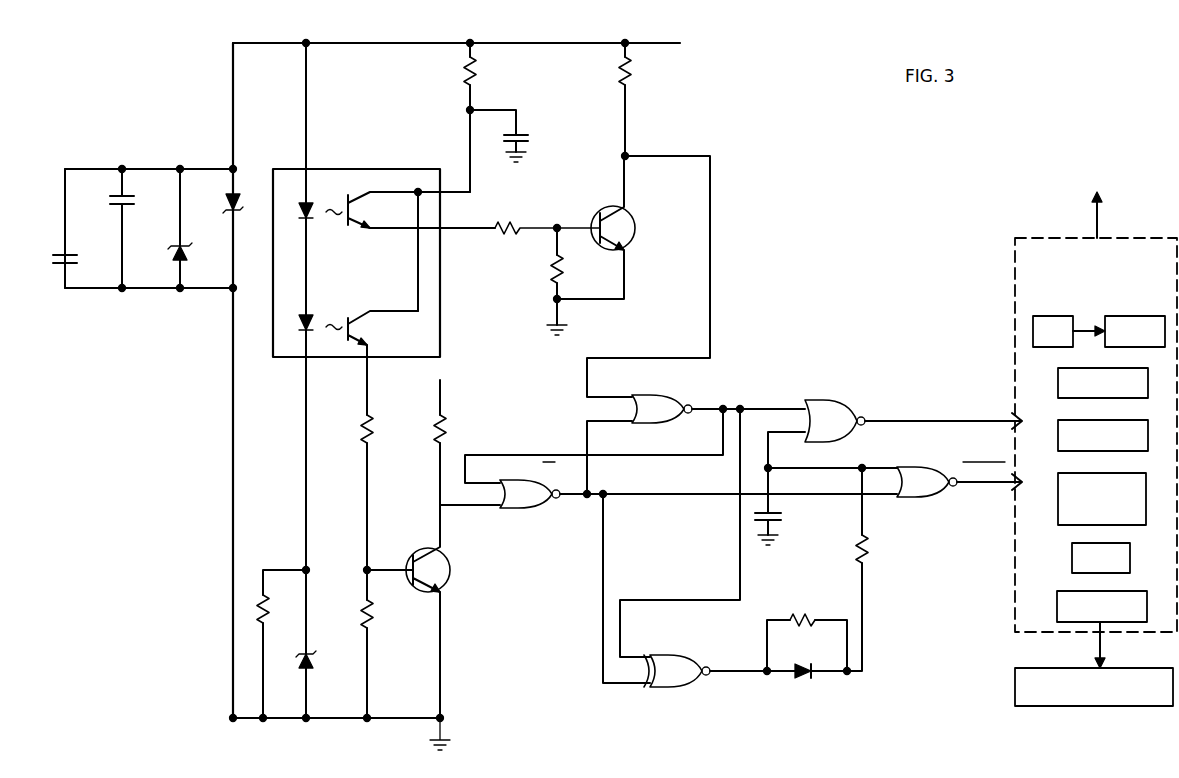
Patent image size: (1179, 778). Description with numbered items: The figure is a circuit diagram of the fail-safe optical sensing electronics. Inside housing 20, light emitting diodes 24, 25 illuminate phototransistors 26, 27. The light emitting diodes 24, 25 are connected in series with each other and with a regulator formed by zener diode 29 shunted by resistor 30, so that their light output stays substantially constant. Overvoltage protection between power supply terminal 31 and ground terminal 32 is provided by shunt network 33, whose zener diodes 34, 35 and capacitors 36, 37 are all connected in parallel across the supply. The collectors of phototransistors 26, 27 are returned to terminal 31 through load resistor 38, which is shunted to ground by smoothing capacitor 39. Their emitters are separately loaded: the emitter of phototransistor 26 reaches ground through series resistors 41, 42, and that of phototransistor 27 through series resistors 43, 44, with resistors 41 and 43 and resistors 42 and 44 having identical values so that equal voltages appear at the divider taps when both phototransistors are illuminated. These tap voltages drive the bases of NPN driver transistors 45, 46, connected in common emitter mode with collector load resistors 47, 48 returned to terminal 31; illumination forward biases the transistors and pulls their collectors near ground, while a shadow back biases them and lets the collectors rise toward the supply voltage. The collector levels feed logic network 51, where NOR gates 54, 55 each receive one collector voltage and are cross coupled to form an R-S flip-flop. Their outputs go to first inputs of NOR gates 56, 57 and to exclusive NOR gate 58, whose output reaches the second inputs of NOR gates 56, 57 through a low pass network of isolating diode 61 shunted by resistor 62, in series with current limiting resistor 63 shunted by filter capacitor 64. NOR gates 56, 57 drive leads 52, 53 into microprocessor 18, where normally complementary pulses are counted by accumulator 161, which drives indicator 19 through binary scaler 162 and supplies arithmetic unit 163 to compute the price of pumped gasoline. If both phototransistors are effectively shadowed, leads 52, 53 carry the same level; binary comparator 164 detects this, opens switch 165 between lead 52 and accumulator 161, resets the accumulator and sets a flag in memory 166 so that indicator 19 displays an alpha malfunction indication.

The microprocessor 18 is at (1016, 238).
The indicator 19 is at (1015, 688).
The housing 20 is at (366, 168).
The light emitting diode 24 is at (302, 210).
The light emitting diode 25 is at (302, 322).
The phototransistor 26 is at (370, 230).
The phototransistor 27 is at (368, 326).
The zener diode 29 is at (310, 666).
The resistor 30 is at (258, 594).
The power supply terminal 31 is at (419, 40).
The ground terminal 32 is at (342, 720).
The shunt network 33 is at (85, 160).
The zener diode 34 is at (238, 188).
The zener diode 35 is at (174, 254).
The capacitor 36 is at (111, 200).
The capacitor 37 is at (60, 258).
The load resistor 38 is at (464, 70).
The smoothing capacitor 39 is at (518, 122).
The resistor 41 is at (544, 219).
The resistor 42 is at (563, 270).
The resistor 43 is at (374, 422).
The resistor 44 is at (374, 620).
The NPN bipolar driver transistor 45 is at (636, 218).
The NPN bipolar driver transistor 46 is at (414, 548).
The load resistor 47 is at (630, 76).
The load resistor 48 is at (444, 416).
The logic network 51 is at (803, 326).
The lead 52 is at (908, 418).
The lead 53 is at (989, 485).
The NOR gate 54 is at (669, 394).
The NOR gate 55 is at (510, 512).
The NOR gate 56 is at (825, 400).
The NOR gate 57 is at (920, 498).
The exclusive NOR gate 58 is at (680, 654).
The isolating diode 61 is at (806, 676).
The resistor 62 is at (802, 618).
The current limiting resistor 63 is at (872, 562).
The filter capacitor 64 is at (779, 530).
The accumulator 161 is at (1134, 316).
The binary scaler 162 is at (1058, 384).
The arithmetic unit 163 is at (1058, 513).
The binary comparator 164 is at (1058, 424).
The switch 165 is at (1024, 320).
The memory 166 is at (1057, 607).